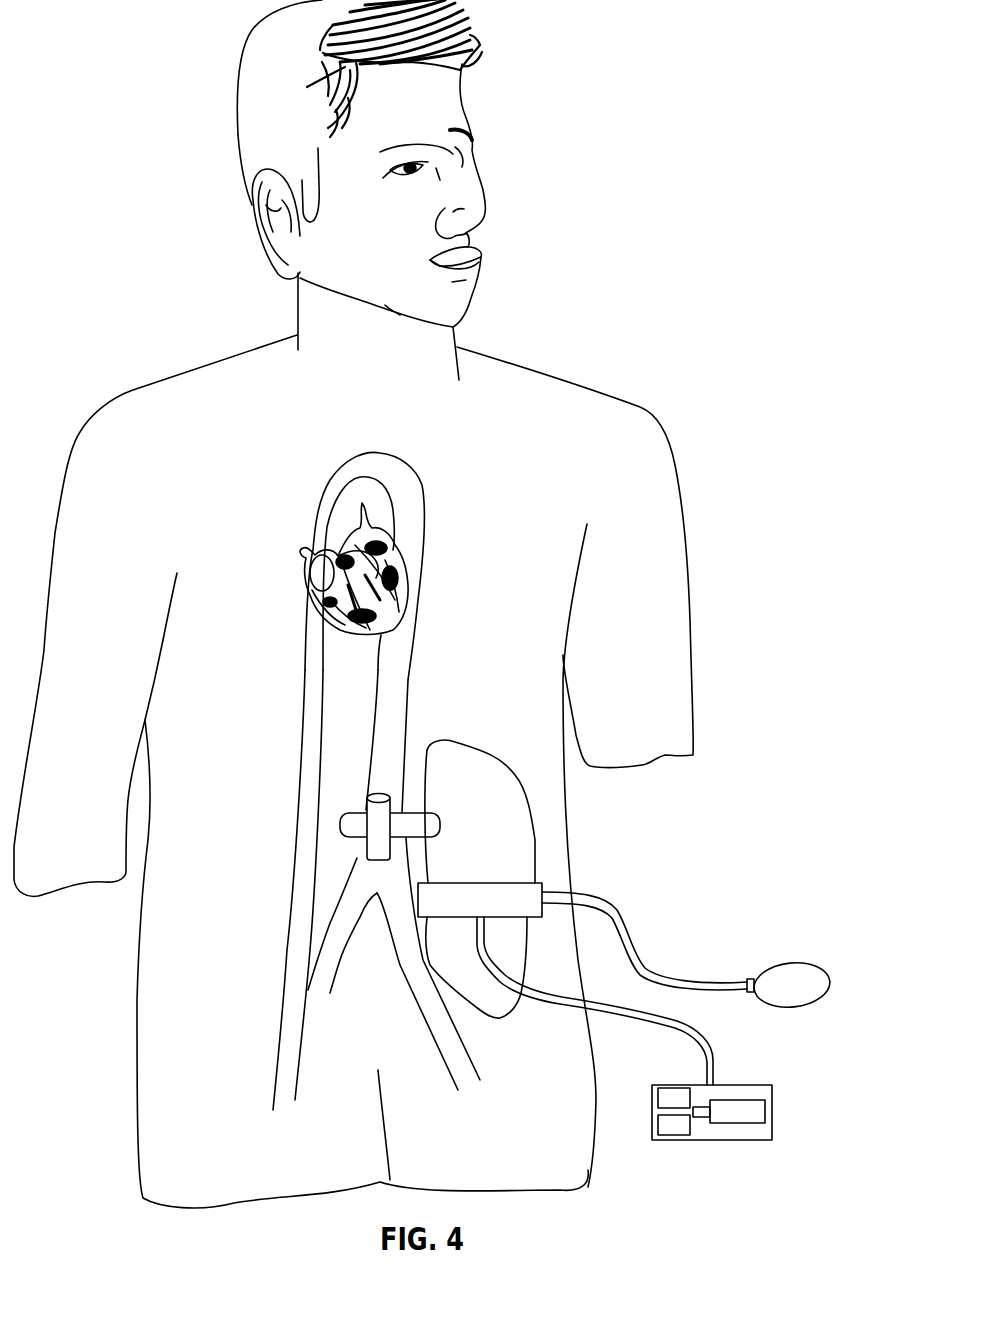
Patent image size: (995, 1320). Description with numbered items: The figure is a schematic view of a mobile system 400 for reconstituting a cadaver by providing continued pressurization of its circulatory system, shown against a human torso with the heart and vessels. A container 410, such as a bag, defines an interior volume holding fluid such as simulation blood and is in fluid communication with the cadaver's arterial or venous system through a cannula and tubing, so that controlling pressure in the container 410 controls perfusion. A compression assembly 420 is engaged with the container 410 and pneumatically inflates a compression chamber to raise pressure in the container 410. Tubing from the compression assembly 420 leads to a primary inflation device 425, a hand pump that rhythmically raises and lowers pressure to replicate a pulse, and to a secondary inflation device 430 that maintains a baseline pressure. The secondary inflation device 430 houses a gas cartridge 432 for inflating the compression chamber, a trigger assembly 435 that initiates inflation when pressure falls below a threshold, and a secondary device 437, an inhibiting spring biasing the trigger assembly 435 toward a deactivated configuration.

The mobile system 400 is at (742, 771).
The container 410 is at (538, 836).
The compression assembly 420 is at (556, 887).
The primary inflation device 425 is at (787, 966).
The secondary inflation device 430 is at (695, 1143).
The gas cartridge 432 is at (738, 1124).
The trigger assembly 435 is at (653, 1097).
The secondary device 437 is at (675, 1138).